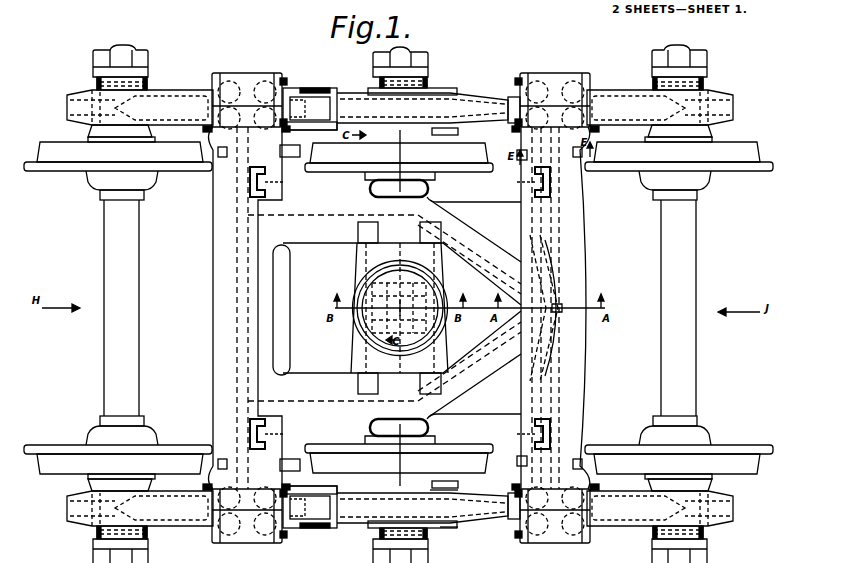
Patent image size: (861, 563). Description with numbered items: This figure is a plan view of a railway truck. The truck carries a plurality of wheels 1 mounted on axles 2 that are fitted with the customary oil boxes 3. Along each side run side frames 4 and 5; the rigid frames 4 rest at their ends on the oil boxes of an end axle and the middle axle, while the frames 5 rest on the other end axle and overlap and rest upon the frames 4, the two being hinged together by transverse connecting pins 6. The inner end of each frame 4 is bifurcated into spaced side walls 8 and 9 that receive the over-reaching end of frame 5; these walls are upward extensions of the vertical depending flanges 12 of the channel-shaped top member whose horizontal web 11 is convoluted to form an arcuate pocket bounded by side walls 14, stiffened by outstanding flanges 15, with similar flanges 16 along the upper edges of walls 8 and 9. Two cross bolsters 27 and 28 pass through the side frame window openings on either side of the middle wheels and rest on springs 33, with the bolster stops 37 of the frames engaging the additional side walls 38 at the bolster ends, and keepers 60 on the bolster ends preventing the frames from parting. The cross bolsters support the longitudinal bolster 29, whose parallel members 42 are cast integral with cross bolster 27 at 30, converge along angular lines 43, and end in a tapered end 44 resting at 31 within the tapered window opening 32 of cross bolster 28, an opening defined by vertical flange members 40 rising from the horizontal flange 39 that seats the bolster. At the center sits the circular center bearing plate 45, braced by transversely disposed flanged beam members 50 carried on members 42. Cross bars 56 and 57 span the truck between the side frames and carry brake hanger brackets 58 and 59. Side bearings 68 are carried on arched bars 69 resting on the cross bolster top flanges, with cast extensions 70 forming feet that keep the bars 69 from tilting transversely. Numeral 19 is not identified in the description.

The wheels 1 is at (62, 170).
The axles 2 is at (131, 262).
The oil boxes 3 is at (141, 60).
The side frame 4 is at (178, 90).
The side frame 5 is at (486, 100).
The transverse connecting pins 6 is at (312, 96).
The side wall 8 is at (452, 490).
The side wall 9 is at (448, 528).
The horizontal web 11 is at (168, 95).
The vertical depending flanges 12 is at (401, 312).
The side walls 14 is at (306, 130).
The outstanding flanges 15 is at (298, 90).
The outstanding flanges 16 is at (453, 88).
The center plate 19 is at (398, 300).
The cross bolster 27 is at (226, 285).
The cross bolster 28 is at (572, 378).
The longitudinal bolster 29 is at (358, 247).
The integral joint 30 is at (285, 246).
The bearing point 31 is at (560, 300).
The window opening 32 is at (560, 316).
The springs 33 is at (230, 90).
The bolster stops 37 is at (206, 130).
The additional side walls 38 is at (226, 82).
The horizontal flange 39 is at (565, 278).
The vertical flange members 40 is at (563, 256).
The parallel members 42 is at (356, 232).
The angular lines 43 is at (492, 289).
The tapered end 44 is at (570, 306).
The center bearing plate 45 is at (354, 300).
The transverse flanged beam members 50 is at (352, 268).
The cross bar 56 is at (520, 212).
The cross bar 57 is at (285, 330).
The brake hanger bracket 58 is at (517, 160).
The brake hanger bracket 59 is at (217, 160).
The keepers 60 is at (284, 78).
The side bearings 68 is at (370, 187).
The bars 69 is at (462, 203).
The extensions 70 is at (533, 196).